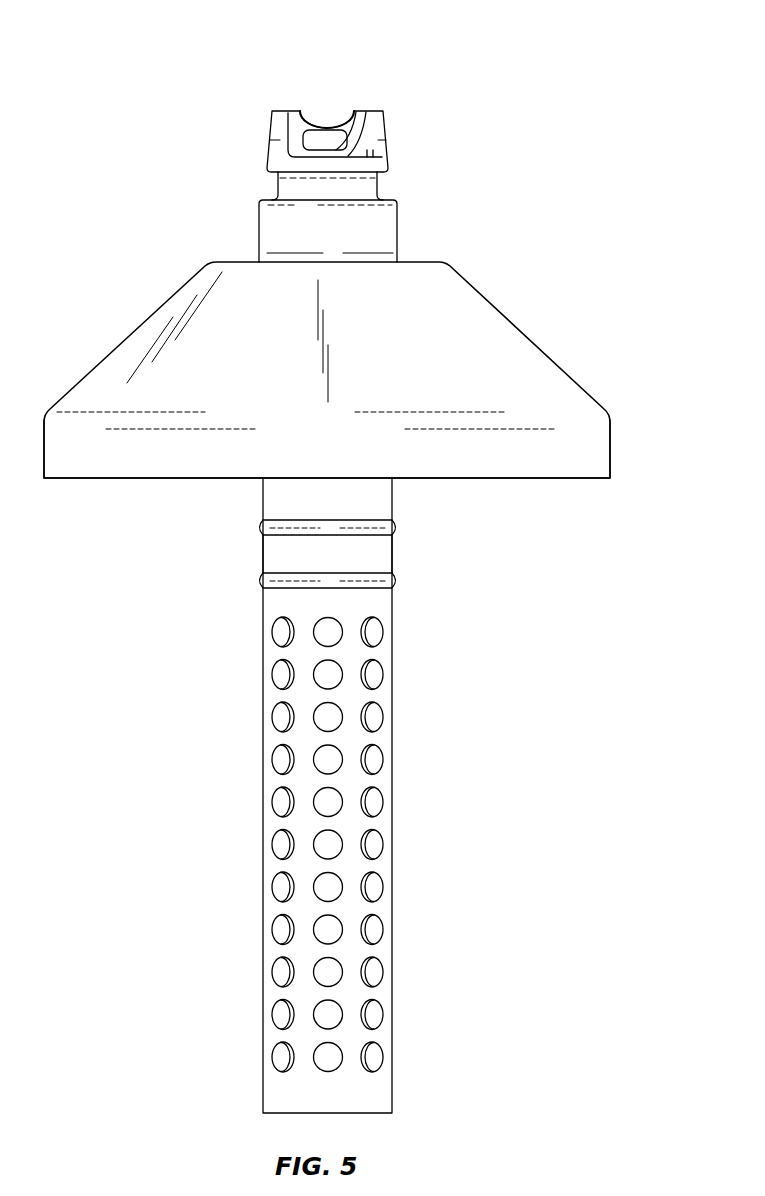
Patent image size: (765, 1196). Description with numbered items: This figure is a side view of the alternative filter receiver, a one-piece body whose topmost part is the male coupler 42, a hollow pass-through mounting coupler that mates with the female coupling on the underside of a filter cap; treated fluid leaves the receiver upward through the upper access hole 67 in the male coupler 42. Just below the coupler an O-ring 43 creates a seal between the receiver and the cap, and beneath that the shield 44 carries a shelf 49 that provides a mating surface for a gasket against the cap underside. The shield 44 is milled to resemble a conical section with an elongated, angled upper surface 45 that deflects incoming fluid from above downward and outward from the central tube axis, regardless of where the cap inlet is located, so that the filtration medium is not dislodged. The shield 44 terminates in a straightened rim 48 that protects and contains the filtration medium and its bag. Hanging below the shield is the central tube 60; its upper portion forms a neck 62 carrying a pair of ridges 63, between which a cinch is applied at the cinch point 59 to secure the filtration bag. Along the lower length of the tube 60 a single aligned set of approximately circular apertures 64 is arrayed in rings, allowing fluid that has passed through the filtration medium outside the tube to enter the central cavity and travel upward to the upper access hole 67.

The male coupler 42 is at (388, 128).
The upper access hole 67 is at (328, 125).
The O-ring 43 is at (377, 187).
The shelf 49 is at (422, 260).
The shield 44 is at (327, 370).
The upper surface 45 is at (423, 358).
The straightened rim 48 is at (610, 450).
The neck 62 is at (316, 570).
The ridges 63 is at (394, 524).
The cinch point 59 is at (393, 553).
The tube 60 is at (338, 795).
The apertures 64 is at (385, 631).